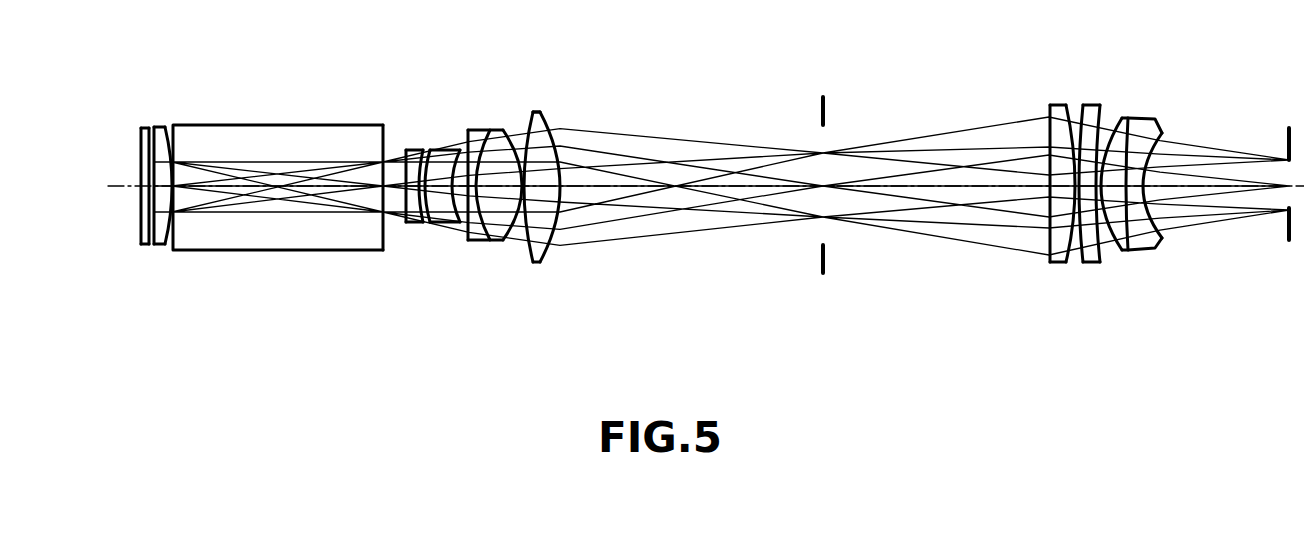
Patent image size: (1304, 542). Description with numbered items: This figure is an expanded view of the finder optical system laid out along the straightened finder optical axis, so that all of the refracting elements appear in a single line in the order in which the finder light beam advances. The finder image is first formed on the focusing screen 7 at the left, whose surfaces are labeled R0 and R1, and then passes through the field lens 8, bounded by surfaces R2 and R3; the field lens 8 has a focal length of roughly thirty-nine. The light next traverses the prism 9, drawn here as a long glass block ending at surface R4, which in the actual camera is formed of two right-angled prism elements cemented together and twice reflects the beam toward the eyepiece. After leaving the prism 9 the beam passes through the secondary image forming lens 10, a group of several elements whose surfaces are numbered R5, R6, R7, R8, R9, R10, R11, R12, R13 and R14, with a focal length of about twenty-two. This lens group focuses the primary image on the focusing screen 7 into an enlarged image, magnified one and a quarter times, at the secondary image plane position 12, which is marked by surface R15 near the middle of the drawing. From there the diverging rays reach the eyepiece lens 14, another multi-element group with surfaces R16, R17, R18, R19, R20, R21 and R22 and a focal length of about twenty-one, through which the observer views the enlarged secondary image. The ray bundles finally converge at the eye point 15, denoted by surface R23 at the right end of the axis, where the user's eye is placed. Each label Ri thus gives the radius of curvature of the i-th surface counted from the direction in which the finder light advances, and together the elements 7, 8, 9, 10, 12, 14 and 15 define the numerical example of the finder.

The focusing screen 7 is at (127, 176).
The field lens 8 is at (188, 174).
The prism 9 is at (279, 186).
The secondary image forming lens 10 is at (506, 183).
The secondary image plane position 12 is at (792, 193).
The eyepiece lens 14 is at (1111, 194).
The eye point 15 is at (1271, 194).
The lens surface R0 is at (140, 128).
The lens surface R1 is at (151, 128).
The lens surface R2 is at (157, 127).
The lens surface R3 is at (168, 128).
The lens surface R4 is at (385, 124).
The lens surface R5 is at (402, 150).
The lens surface R6 is at (418, 150).
The lens surface R7 is at (432, 150).
The lens surface R8 is at (456, 150).
The lens surface R9 is at (470, 130).
The lens surface R10 is at (488, 130).
The lens surface R11 is at (505, 130).
The lens surface R12 is at (535, 112).
The lens surface R13 is at (540, 112).
The lens surface R14 is at (557, 125).
The lens surface R15 is at (823, 97).
The lens surface R16 is at (1050, 105).
The lens surface R17 is at (1064, 105).
The lens surface R18 is at (1085, 105).
The lens surface R19 is at (1098, 105).
The lens surface R20 is at (1123, 118).
The lens surface R21 is at (1128, 118).
The lens surface R22 is at (1163, 142).
The lens surface R23 is at (1289, 128).